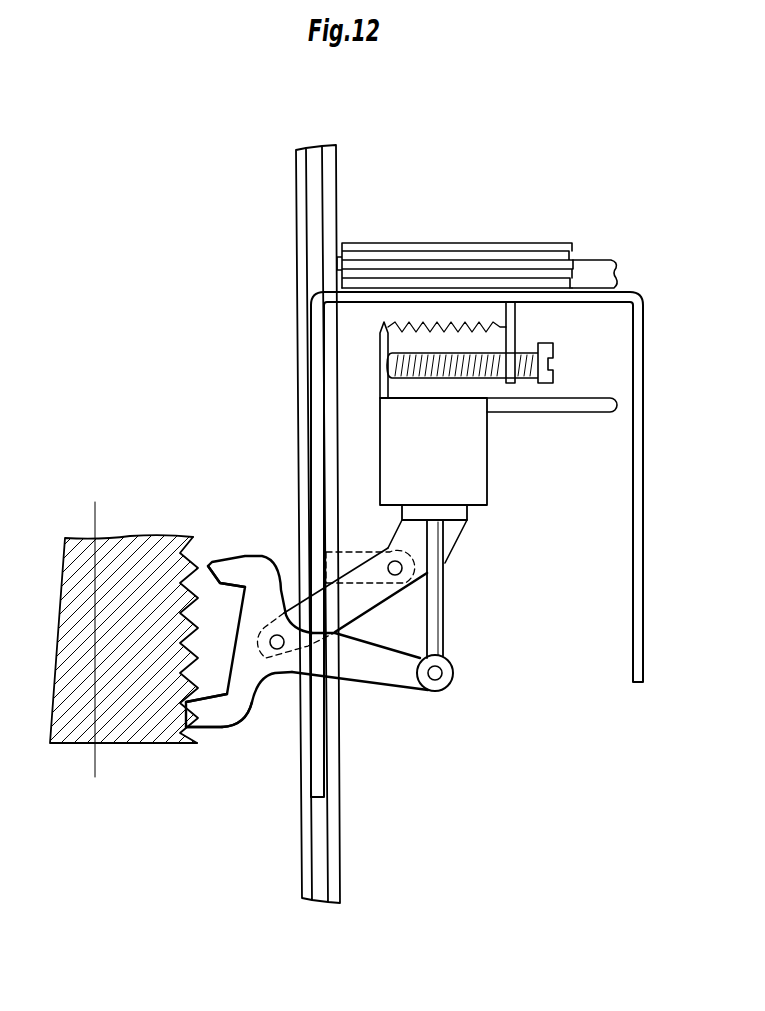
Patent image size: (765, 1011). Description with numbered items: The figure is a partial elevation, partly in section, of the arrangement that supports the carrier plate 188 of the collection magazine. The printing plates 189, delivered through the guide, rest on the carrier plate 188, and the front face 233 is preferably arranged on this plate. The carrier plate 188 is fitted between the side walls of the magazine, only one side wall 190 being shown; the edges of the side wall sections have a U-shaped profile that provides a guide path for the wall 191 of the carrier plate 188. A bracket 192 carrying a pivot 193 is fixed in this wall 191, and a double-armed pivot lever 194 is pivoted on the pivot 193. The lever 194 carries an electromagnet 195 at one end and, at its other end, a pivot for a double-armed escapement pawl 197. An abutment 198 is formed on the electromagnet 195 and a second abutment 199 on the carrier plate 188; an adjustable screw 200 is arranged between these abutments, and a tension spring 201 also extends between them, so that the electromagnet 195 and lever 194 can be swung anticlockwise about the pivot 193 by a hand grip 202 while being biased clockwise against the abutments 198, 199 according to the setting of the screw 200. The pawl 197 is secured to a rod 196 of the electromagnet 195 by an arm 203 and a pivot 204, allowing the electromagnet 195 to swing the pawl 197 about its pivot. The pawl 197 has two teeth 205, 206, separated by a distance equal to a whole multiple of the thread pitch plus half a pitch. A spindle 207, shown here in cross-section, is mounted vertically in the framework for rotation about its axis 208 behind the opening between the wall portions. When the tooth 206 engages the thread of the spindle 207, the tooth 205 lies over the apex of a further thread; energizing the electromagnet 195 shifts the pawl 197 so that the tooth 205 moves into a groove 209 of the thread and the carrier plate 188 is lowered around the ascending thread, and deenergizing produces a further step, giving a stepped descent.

The carrier plate 188 is at (377, 297).
The printing plates 189 is at (430, 276).
The side wall 190 is at (306, 213).
The wall of the carrier plate 191 is at (318, 343).
The bracket 192 is at (350, 566).
The pivot 193 is at (402, 567).
The double-armed pivot lever 194 is at (383, 592).
The electromagnet 195 is at (488, 468).
The rod 196 is at (443, 630).
The double-armed escapement pawl 197 is at (248, 693).
The abutment 198 is at (383, 360).
The abutment 199 is at (506, 300).
The adjustable screw 200 is at (546, 345).
The tension spring 201 is at (380, 330).
The hand grip 202 is at (578, 396).
The arm 203 is at (397, 677).
The pivot 204 is at (440, 680).
The tooth 205 is at (228, 553).
The tooth 206 is at (202, 707).
The spindle 207 is at (152, 735).
The axis 208 is at (95, 757).
The groove 209 is at (192, 578).
The front face 233 is at (640, 617).